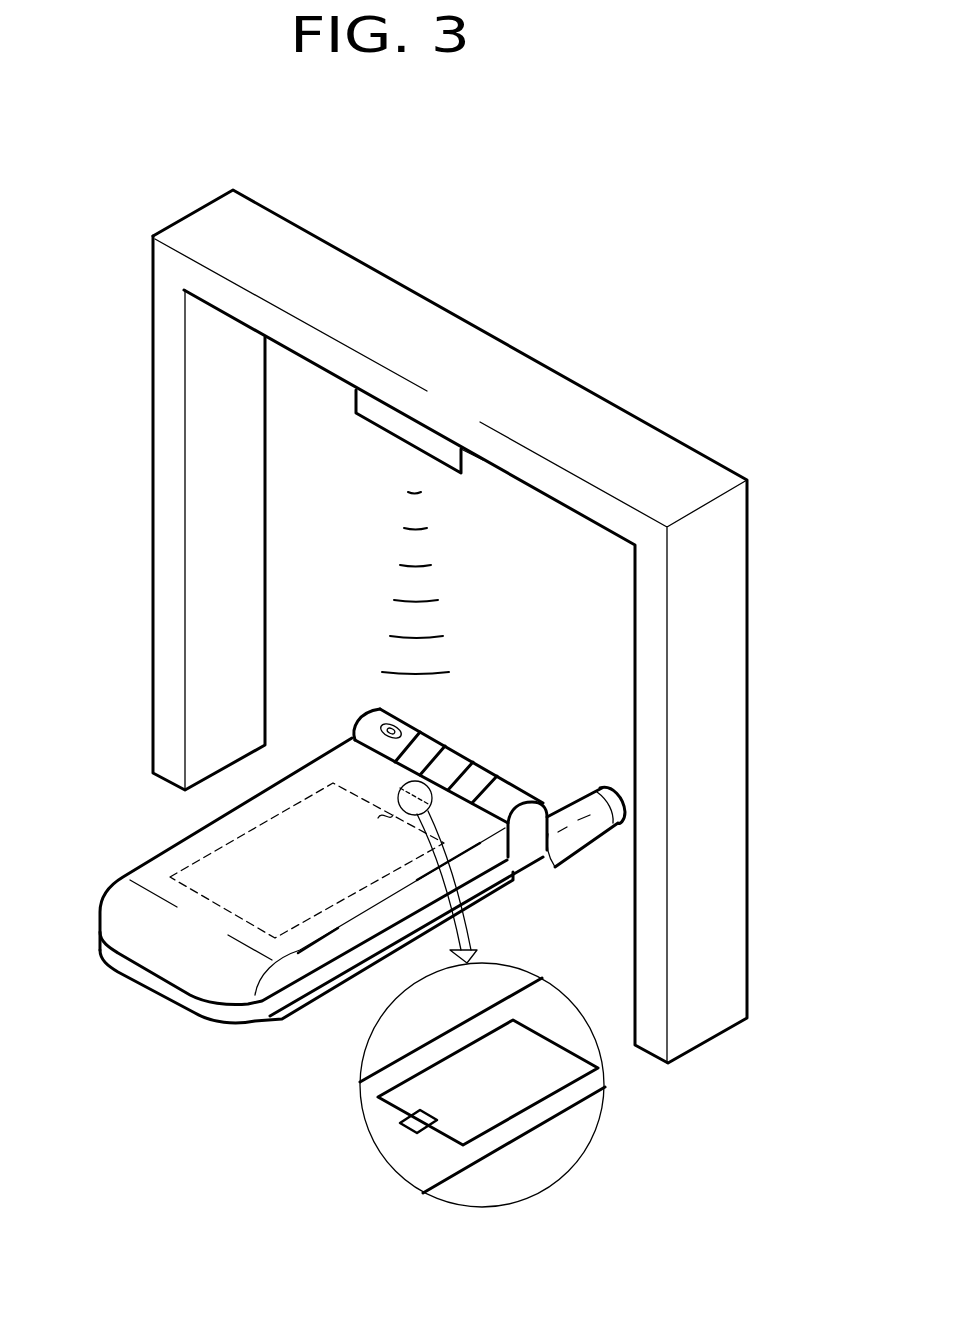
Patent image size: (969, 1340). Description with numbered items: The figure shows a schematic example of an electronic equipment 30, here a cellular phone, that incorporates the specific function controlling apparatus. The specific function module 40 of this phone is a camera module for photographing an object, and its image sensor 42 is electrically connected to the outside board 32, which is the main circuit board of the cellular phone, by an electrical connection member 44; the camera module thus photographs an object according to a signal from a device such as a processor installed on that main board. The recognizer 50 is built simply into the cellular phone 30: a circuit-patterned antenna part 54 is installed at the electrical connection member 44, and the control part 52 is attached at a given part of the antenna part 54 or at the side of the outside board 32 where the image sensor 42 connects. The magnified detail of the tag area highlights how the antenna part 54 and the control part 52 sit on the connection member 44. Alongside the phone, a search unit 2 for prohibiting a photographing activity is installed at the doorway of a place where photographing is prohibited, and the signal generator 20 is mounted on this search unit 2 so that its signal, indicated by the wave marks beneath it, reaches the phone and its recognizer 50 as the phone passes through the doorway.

The search unit 2 is at (167, 685).
The signal generator 20 is at (392, 424).
The electronic equipment 30 is at (203, 1003).
The outside board 32 is at (223, 910).
The specific function module 40 is at (325, 663).
The image sensor 42 is at (380, 718).
The electrical connection member 44 is at (398, 790).
The recognizer 50 is at (447, 1130).
The control part 52 is at (403, 1125).
The antenna part 54 is at (443, 1137).